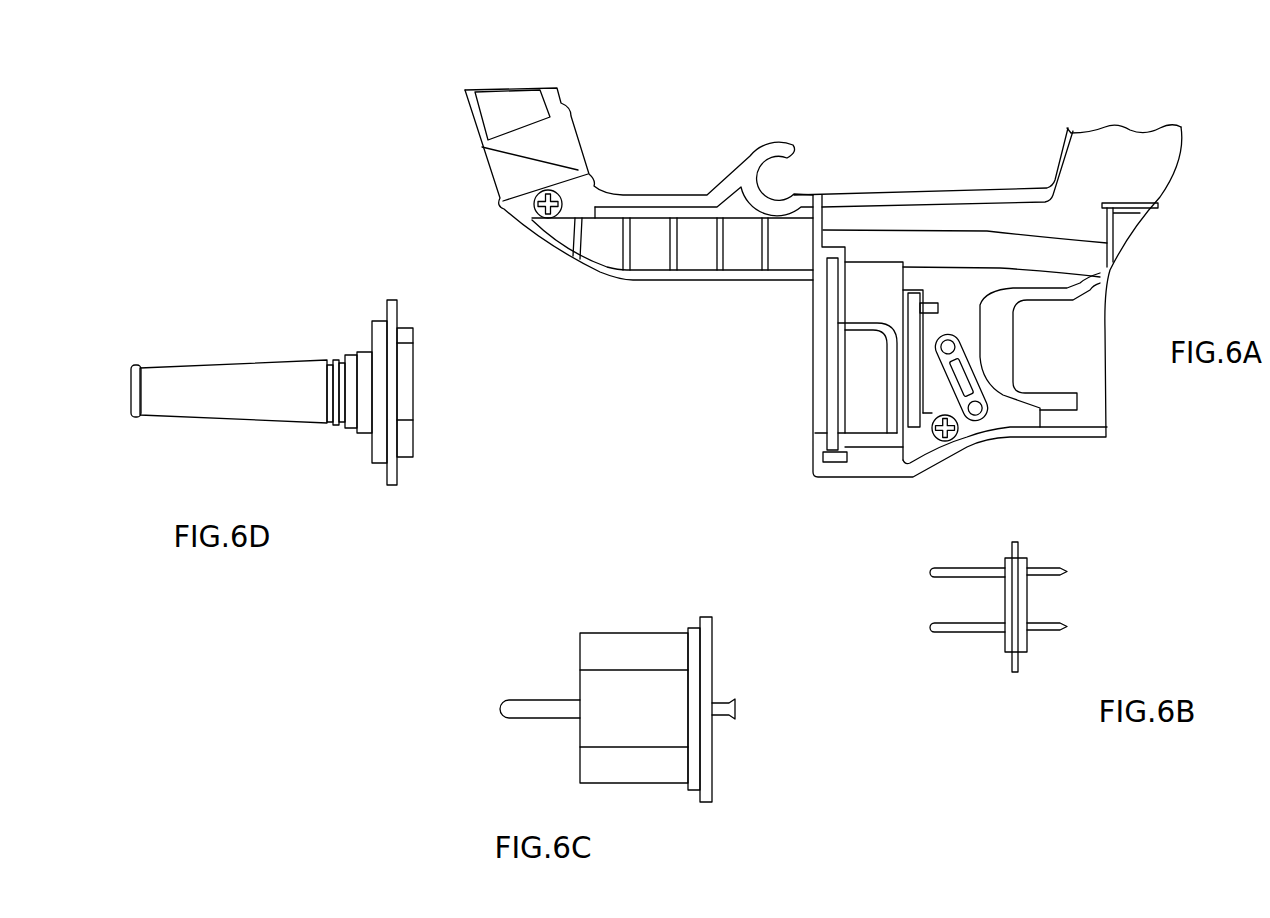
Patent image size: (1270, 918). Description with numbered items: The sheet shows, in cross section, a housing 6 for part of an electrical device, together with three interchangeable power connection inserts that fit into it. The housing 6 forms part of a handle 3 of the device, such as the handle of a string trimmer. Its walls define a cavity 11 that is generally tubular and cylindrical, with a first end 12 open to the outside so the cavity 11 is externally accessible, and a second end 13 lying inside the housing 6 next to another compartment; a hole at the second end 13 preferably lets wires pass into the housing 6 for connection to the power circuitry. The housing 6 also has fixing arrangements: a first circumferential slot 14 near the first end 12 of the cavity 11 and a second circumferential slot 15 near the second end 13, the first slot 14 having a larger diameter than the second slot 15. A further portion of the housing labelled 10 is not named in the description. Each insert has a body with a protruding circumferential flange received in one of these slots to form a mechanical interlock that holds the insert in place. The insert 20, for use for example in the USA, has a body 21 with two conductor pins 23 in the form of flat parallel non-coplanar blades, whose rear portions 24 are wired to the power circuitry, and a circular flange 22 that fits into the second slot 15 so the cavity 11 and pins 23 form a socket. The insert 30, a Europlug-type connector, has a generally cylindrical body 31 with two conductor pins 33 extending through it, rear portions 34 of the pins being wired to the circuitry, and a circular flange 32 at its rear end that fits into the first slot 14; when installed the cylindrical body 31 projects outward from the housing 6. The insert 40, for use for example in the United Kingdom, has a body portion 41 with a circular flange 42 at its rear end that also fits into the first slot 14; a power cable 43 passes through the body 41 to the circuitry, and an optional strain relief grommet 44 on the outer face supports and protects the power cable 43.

In FIG. 6A, the handle 3 is at (1158, 200).
In FIG. 6A, the housing 6 is at (1122, 147).
In FIG. 6A, the housing 10 is at (870, 212).
In FIG. 6A, the cavity 11 is at (866, 413).
In FIG. 6A, the first end 12 is at (775, 386).
In FIG. 6A, the second end 13 is at (904, 243).
In FIG. 6A, the first circumferential slot 14 is at (829, 300).
In FIG. 6A, the second circumferential slot 15 is at (912, 418).
In FIG. 6B, the insert 20 is at (1111, 629).
In FIG. 6B, the body 21 is at (1008, 640).
In FIG. 6B, the circular flange 22 is at (1018, 665).
In FIG. 6B, the conductor pins 23 is at (955, 625).
In FIG. 6B, the rear portions of the pins 24 is at (1047, 622).
In FIG. 6C, the insert 30 is at (542, 662).
In FIG. 6C, the body 31 is at (650, 758).
In FIG. 6C, the circular flange 32 is at (704, 793).
In FIG. 6C, the conductor pins 33 is at (537, 710).
In FIG. 6C, the rear portions of the pins 34 is at (720, 715).
In FIG. 6D, the insert 40 is at (170, 467).
In FIG. 6D, the body portion 41 is at (383, 395).
In FIG. 6D, the circular flange 42 is at (390, 478).
In FIG. 6D, the power cable 43 is at (431, 393).
In FIG. 6D, the strain relief grommet 44 is at (237, 380).